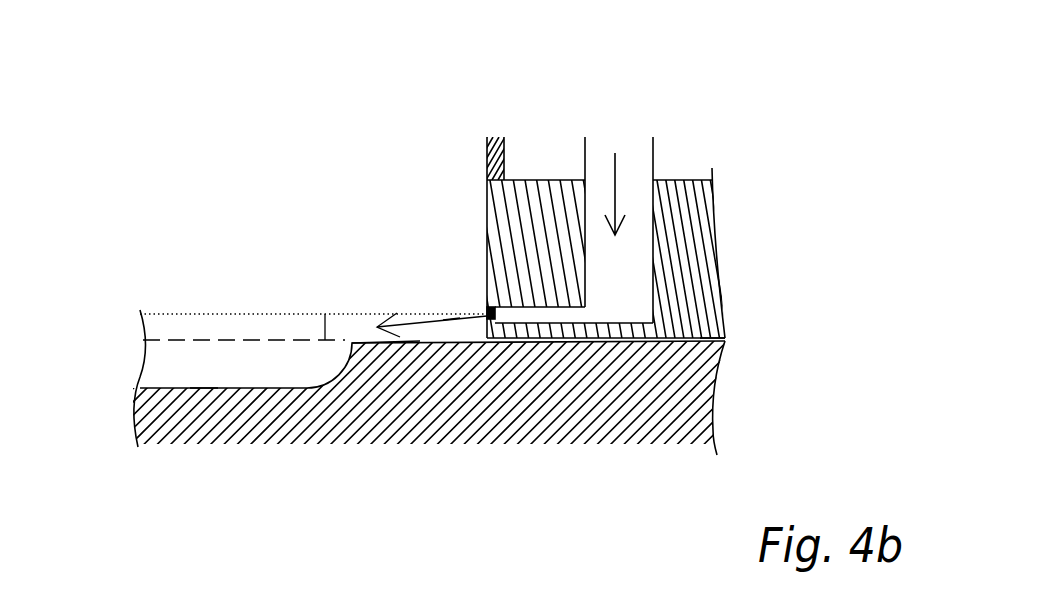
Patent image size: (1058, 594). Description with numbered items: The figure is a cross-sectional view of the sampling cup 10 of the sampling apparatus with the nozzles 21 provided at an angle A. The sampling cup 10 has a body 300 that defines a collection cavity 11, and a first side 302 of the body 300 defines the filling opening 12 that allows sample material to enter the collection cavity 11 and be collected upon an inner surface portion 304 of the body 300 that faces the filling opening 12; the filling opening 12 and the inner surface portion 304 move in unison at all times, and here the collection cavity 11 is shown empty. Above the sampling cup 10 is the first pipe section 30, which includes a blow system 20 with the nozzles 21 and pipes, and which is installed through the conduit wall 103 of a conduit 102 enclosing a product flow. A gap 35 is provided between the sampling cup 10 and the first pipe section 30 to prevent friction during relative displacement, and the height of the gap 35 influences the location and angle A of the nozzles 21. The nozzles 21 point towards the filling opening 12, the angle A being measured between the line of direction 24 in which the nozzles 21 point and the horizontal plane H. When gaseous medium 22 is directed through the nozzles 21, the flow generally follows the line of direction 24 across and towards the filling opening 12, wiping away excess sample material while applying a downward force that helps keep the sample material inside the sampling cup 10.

The sampling cup 10 is at (143, 422).
The collection cavity 11 is at (163, 373).
The filling opening 12 is at (222, 341).
The blow system 20 is at (586, 174).
The nozzles 21 is at (465, 296).
The gaseous medium 22 is at (615, 187).
The line of direction 24 is at (443, 320).
The first pipe section 30 is at (540, 187).
The gap 35 is at (755, 338).
The conduit 102 is at (419, 137).
The conduit wall 103 is at (480, 155).
The body 300 is at (587, 437).
The first side 302 is at (364, 342).
The inner surface portion 304 is at (190, 388).
The angle A is at (417, 318).
The horizontal plane H is at (325, 313).